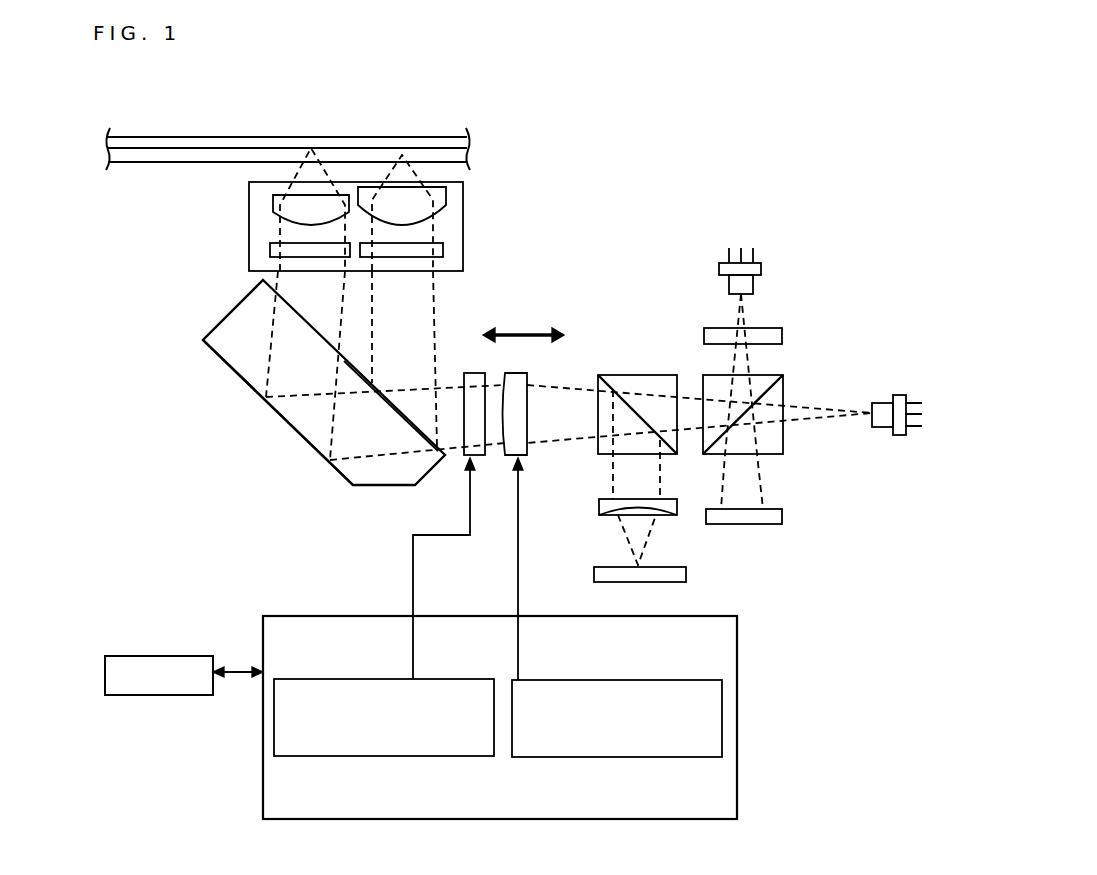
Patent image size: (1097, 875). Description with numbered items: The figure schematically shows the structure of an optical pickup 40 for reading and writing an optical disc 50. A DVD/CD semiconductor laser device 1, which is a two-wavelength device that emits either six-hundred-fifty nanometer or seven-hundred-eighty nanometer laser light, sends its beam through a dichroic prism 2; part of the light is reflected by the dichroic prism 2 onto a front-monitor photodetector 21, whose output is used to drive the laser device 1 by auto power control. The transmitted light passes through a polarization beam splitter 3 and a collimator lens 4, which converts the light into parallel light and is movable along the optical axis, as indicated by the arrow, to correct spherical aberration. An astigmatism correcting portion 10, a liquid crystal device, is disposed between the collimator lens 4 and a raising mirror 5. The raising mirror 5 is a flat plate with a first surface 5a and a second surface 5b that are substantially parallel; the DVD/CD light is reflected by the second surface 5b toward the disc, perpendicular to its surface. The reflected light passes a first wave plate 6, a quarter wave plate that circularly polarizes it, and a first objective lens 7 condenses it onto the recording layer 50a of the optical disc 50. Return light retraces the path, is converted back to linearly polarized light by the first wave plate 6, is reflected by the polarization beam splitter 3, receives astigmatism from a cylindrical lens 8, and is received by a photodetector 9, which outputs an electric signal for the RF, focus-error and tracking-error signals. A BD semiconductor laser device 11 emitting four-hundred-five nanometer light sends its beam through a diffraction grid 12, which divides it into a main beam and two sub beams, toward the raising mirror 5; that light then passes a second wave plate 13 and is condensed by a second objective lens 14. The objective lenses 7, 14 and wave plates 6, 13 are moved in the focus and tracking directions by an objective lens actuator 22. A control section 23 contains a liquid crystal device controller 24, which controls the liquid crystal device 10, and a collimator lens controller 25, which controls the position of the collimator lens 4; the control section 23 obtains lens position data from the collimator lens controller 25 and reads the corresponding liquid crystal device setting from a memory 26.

The DVD/CD semiconductor laser device 1 is at (898, 437).
The dichroic prism 2 is at (783, 392).
The polarization beam splitter 3 is at (638, 374).
The collimator lens 4 is at (527, 376).
The raising mirror 5 is at (215, 330).
The first surface 5a is at (384, 397).
The second surface 5b is at (248, 383).
The first wave plate 6 is at (270, 250).
The first objective lens 7 is at (273, 205).
The cylindrical lens 8 is at (599, 508).
The photodetector 9 is at (594, 578).
The astigmatism correcting portion (liquid crystal device) 10 is at (473, 371).
The BD semiconductor laser device 11 is at (761, 268).
The diffraction grid 12 is at (782, 335).
The second wave plate 13 is at (443, 250).
The second objective lens 14 is at (446, 201).
The front-monitor photodetector 21 is at (753, 525).
The objective lens actuator 22 is at (463, 183).
The control section 23 is at (737, 676).
The liquid crystal device controller 24 is at (379, 757).
The collimator lens controller 25 is at (547, 758).
The memory 26 is at (170, 695).
The optical pickup 40 is at (622, 121).
The optical disc 50 is at (268, 137).
The recording layer 50a is at (353, 150).